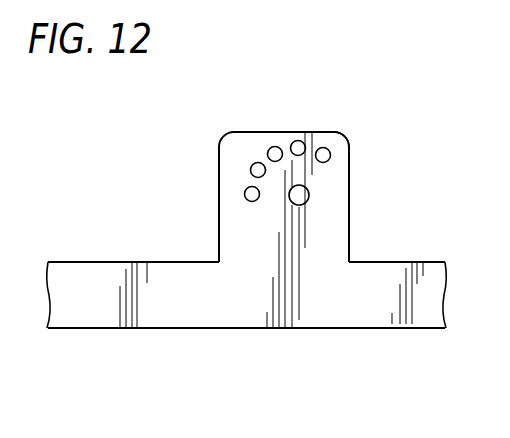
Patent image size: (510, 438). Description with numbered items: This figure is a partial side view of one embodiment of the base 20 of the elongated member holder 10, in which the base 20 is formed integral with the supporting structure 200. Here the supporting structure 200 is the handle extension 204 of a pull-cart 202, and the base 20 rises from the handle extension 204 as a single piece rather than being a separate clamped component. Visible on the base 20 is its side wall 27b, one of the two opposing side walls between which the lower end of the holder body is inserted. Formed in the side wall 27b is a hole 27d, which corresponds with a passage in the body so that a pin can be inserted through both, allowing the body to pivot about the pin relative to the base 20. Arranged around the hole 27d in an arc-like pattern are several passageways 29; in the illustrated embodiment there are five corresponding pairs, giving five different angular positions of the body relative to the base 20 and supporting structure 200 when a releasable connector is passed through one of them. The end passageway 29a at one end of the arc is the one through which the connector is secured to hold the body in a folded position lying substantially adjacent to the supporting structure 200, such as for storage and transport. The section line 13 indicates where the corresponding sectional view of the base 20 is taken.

The elongated member holder 10 is at (347, 138).
The section line 13 is at (298, 72).
The base 20 is at (349, 147).
The side wall 27b is at (349, 234).
The hole 27d is at (309, 195).
The passageways 29 is at (247, 189).
The end passageway 29a is at (245, 190).
The supporting structure 200 is at (107, 262).
The pull-cart 202 is at (72, 261).
The handle extension 204 is at (163, 261).